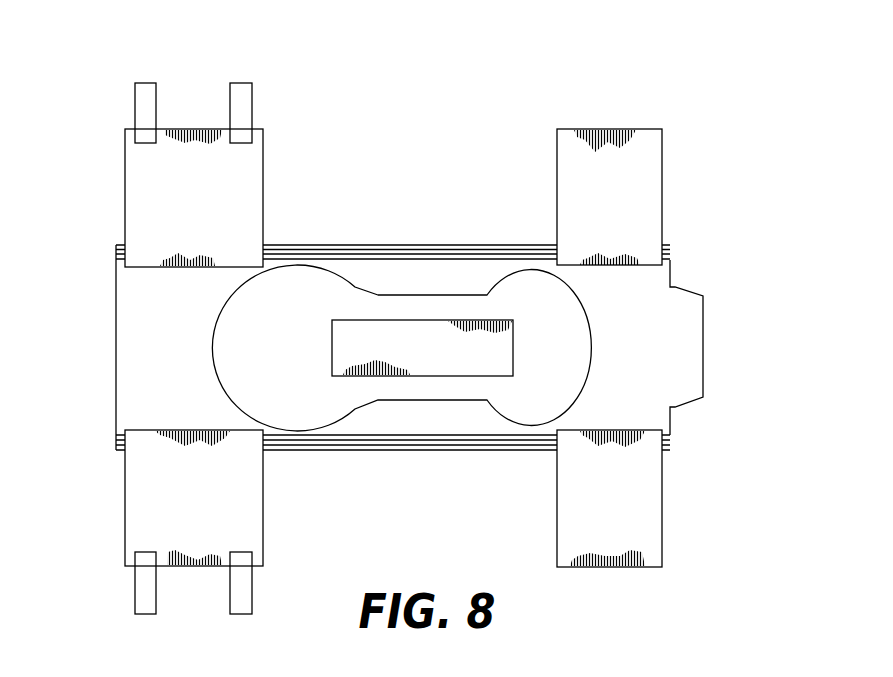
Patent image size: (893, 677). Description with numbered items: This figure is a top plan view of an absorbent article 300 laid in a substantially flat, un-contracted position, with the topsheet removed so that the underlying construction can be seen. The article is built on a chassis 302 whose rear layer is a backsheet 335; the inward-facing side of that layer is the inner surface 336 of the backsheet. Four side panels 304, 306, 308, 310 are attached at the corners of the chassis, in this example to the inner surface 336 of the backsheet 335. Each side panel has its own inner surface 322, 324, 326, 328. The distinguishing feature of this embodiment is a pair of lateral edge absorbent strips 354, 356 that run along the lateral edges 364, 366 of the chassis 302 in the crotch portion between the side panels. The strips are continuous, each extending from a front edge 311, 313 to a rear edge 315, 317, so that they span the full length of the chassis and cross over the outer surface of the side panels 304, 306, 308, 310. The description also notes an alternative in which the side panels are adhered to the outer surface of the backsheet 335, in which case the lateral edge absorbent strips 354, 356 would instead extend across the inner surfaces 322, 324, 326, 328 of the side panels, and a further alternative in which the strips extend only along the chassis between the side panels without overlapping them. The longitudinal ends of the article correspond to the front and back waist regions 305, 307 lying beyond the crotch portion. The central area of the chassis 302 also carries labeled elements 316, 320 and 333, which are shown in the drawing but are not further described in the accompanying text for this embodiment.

The absorbent article 300 is at (658, 95).
The chassis 302 is at (483, 245).
The side panel 304 is at (145, 207).
The lower angled edge portion 305 is at (638, 412).
The side panel 306 is at (135, 503).
The carrier side portions 307 is at (137, 412).
The side panel 308 is at (645, 540).
The side panel 310 is at (650, 152).
The front edge 311 is at (672, 250).
The front edge 313 is at (672, 445).
The rear edge 315 is at (118, 250).
The central opening 316 is at (212, 348).
The rear edge 317 is at (118, 447).
The cell terminals 320 is at (146, 92).
The inner surface of side panel 322 is at (185, 200).
The inner surface of side panel 324 is at (170, 513).
The inner surface of side panel 326 is at (632, 205).
The inner surface of side panel 328 is at (630, 495).
The central mounting window 333 is at (367, 340).
The backsheet 335 is at (705, 342).
The inner surface of backsheet 336 is at (650, 312).
The lateral edge absorbent strip 354 is at (497, 432).
The lateral edge absorbent strip 356 is at (293, 250).
The lateral edge 364 is at (418, 447).
The lateral edge 366 is at (418, 246).